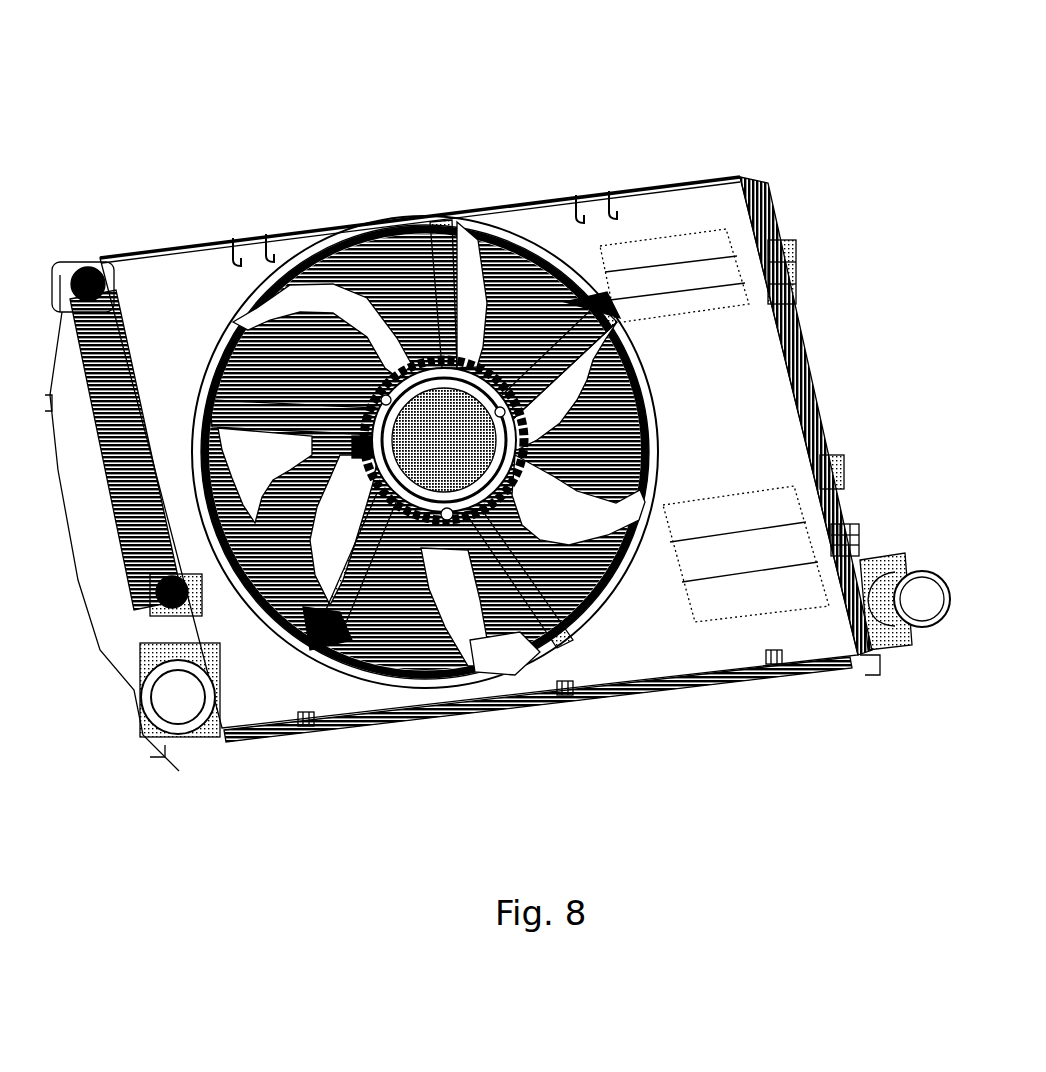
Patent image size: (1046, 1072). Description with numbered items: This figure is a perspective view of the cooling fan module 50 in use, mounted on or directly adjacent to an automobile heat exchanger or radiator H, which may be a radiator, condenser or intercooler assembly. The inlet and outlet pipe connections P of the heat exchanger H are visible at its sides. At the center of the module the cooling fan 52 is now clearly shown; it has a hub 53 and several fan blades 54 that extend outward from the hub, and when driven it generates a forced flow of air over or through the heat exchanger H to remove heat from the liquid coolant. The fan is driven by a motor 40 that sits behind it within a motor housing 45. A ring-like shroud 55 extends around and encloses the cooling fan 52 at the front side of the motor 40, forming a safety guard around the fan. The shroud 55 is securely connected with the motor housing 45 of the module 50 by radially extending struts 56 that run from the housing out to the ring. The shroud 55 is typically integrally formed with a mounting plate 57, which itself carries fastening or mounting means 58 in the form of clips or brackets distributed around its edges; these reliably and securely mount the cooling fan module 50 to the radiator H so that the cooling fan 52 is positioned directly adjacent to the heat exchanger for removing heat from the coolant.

The motor 40 is at (632, 429).
The motor housing 45 is at (380, 487).
The cooling fan module 50 is at (415, 106).
The cooling fan 52 is at (499, 652).
The hub 53 is at (350, 445).
The fan blades 54 is at (486, 444).
The ring-like shroud 55 is at (233, 320).
The radially extending struts 56 is at (575, 300).
The mounting plate 57 is at (690, 208).
The fastening or mounting means 58 is at (237, 243).
The heat exchanger H is at (356, 266).
The inlet and outlet pipe connections P is at (917, 572).